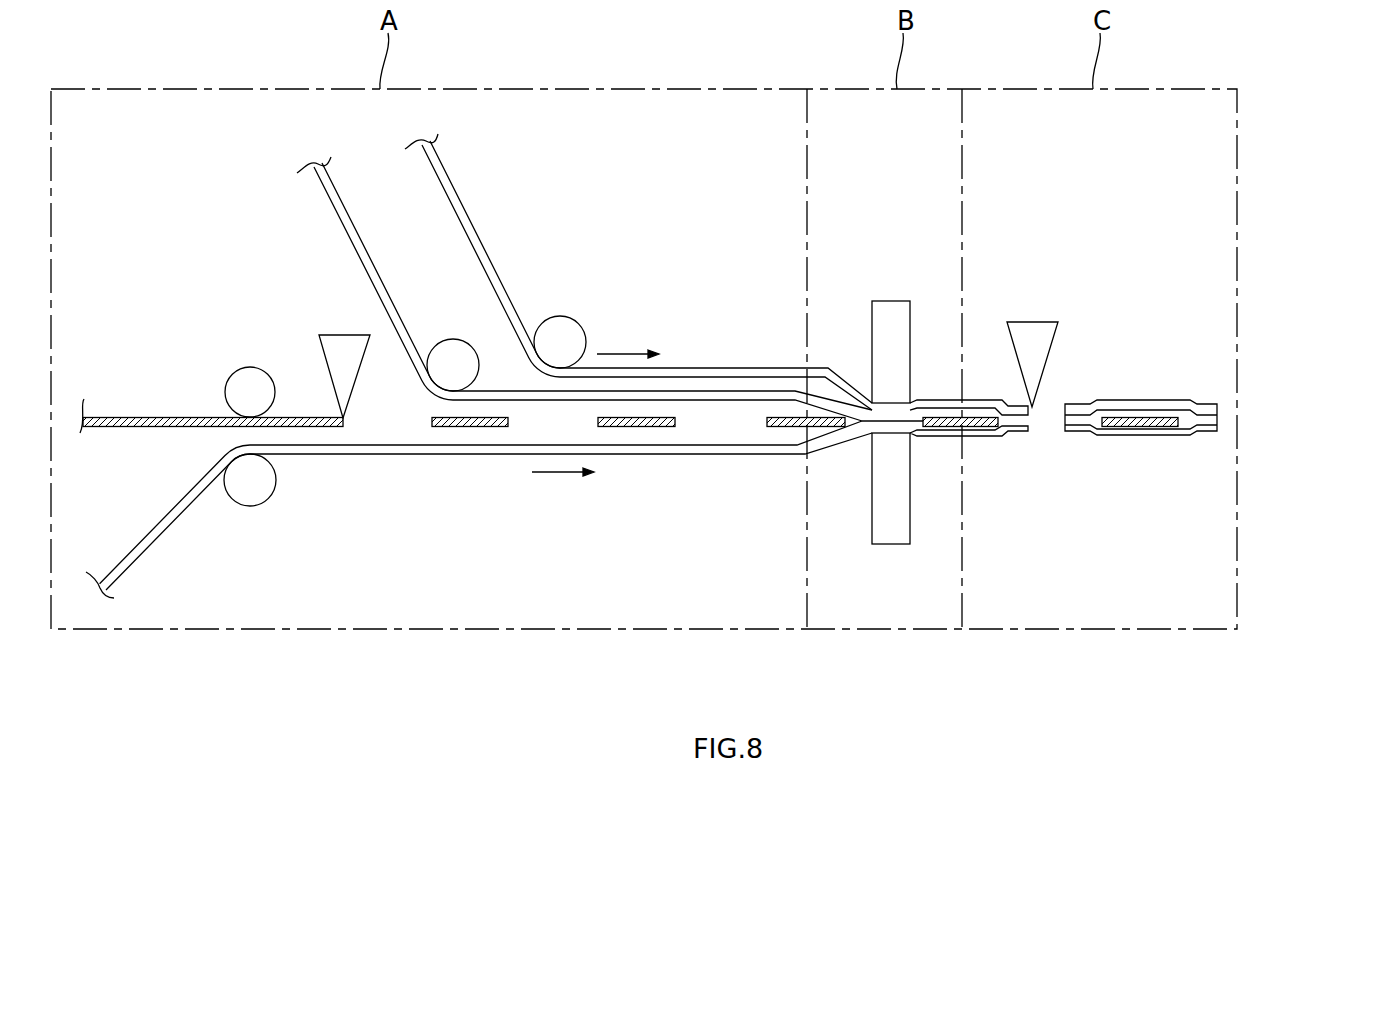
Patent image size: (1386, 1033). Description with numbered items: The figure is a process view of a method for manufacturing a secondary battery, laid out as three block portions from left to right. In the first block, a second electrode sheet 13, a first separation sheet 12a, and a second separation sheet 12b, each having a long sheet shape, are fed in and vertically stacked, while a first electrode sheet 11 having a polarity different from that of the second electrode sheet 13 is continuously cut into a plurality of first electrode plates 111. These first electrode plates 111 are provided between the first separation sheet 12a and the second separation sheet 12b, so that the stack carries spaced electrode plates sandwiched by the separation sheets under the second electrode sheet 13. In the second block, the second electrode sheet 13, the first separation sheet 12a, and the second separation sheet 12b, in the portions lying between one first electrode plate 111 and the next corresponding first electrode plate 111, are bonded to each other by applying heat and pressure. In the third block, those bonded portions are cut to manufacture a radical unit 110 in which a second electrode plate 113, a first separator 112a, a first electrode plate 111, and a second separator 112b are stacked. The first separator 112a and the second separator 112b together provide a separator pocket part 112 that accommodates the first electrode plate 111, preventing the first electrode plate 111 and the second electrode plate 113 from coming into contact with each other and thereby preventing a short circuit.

The first electrode sheet 11 is at (142, 417).
The first separation sheet 12a is at (344, 225).
The second separation sheet 12b is at (370, 447).
The second electrode sheet 13 is at (466, 228).
The radical unit 110 is at (1225, 384).
The first electrode plate 111 is at (648, 428).
The separator pocket part 112 is at (1225, 435).
The first separator 112a is at (1210, 418).
The second separator 112b is at (1198, 427).
The second electrode plate 113 is at (1108, 404).